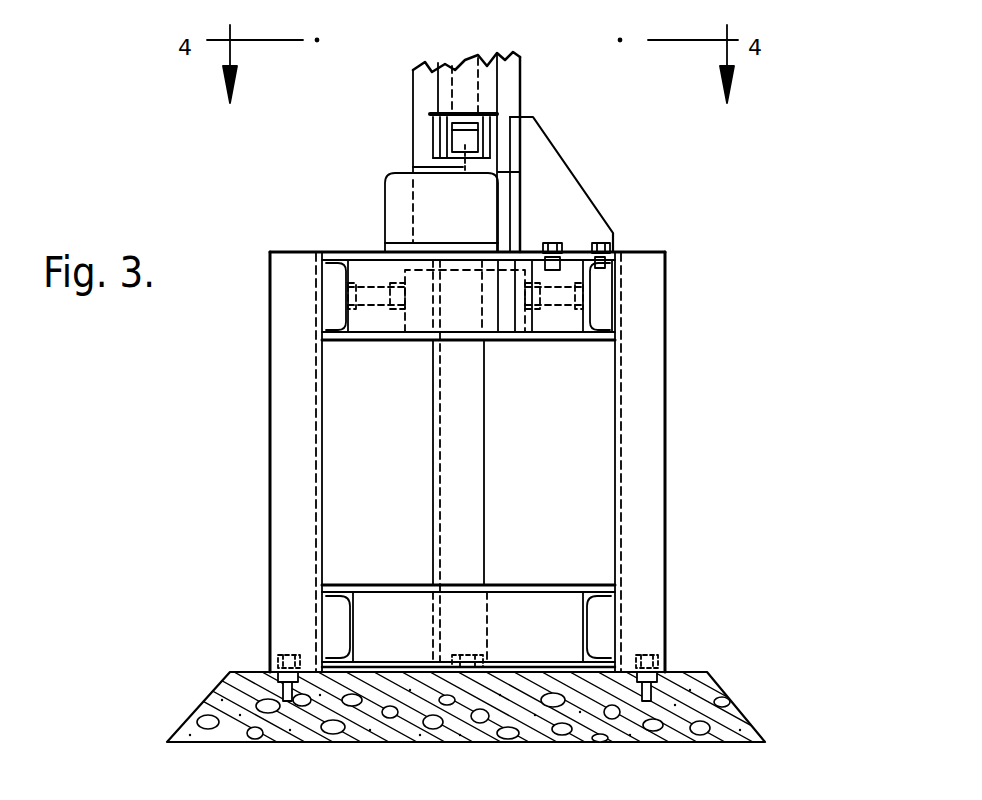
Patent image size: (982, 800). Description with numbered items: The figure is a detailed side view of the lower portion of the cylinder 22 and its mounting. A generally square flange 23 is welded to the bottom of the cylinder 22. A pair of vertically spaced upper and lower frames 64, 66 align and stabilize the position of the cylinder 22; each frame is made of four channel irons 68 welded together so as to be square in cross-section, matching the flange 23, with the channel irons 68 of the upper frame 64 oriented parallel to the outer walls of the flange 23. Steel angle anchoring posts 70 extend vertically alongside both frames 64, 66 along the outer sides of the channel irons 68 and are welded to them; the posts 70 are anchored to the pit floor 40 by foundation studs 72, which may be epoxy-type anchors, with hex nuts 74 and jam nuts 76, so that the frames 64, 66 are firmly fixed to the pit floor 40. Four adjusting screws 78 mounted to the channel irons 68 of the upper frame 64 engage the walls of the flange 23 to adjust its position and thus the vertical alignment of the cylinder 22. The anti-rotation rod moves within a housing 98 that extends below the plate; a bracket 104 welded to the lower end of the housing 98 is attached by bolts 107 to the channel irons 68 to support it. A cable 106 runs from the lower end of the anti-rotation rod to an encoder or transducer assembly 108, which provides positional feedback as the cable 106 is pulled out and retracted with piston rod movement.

The cylinder 22 is at (413, 91).
The housing 98 is at (490, 88).
The bracket 104 is at (537, 128).
The cable 106 is at (413, 165).
The encoder or transducer assembly 108 is at (490, 190).
The bolts 107 is at (560, 247).
The upper frame 64 is at (615, 345).
The anchoring posts 70 is at (450, 441).
The adjusting screws 78 is at (392, 322).
The flange 23 is at (372, 348).
The channel irons 68 is at (556, 343).
The lower frame 66 is at (560, 592).
The hex nuts 74 is at (290, 650).
The jam nuts 76 is at (290, 676).
The foundation studs 72 is at (283, 697).
The pit floor 40 is at (745, 724).